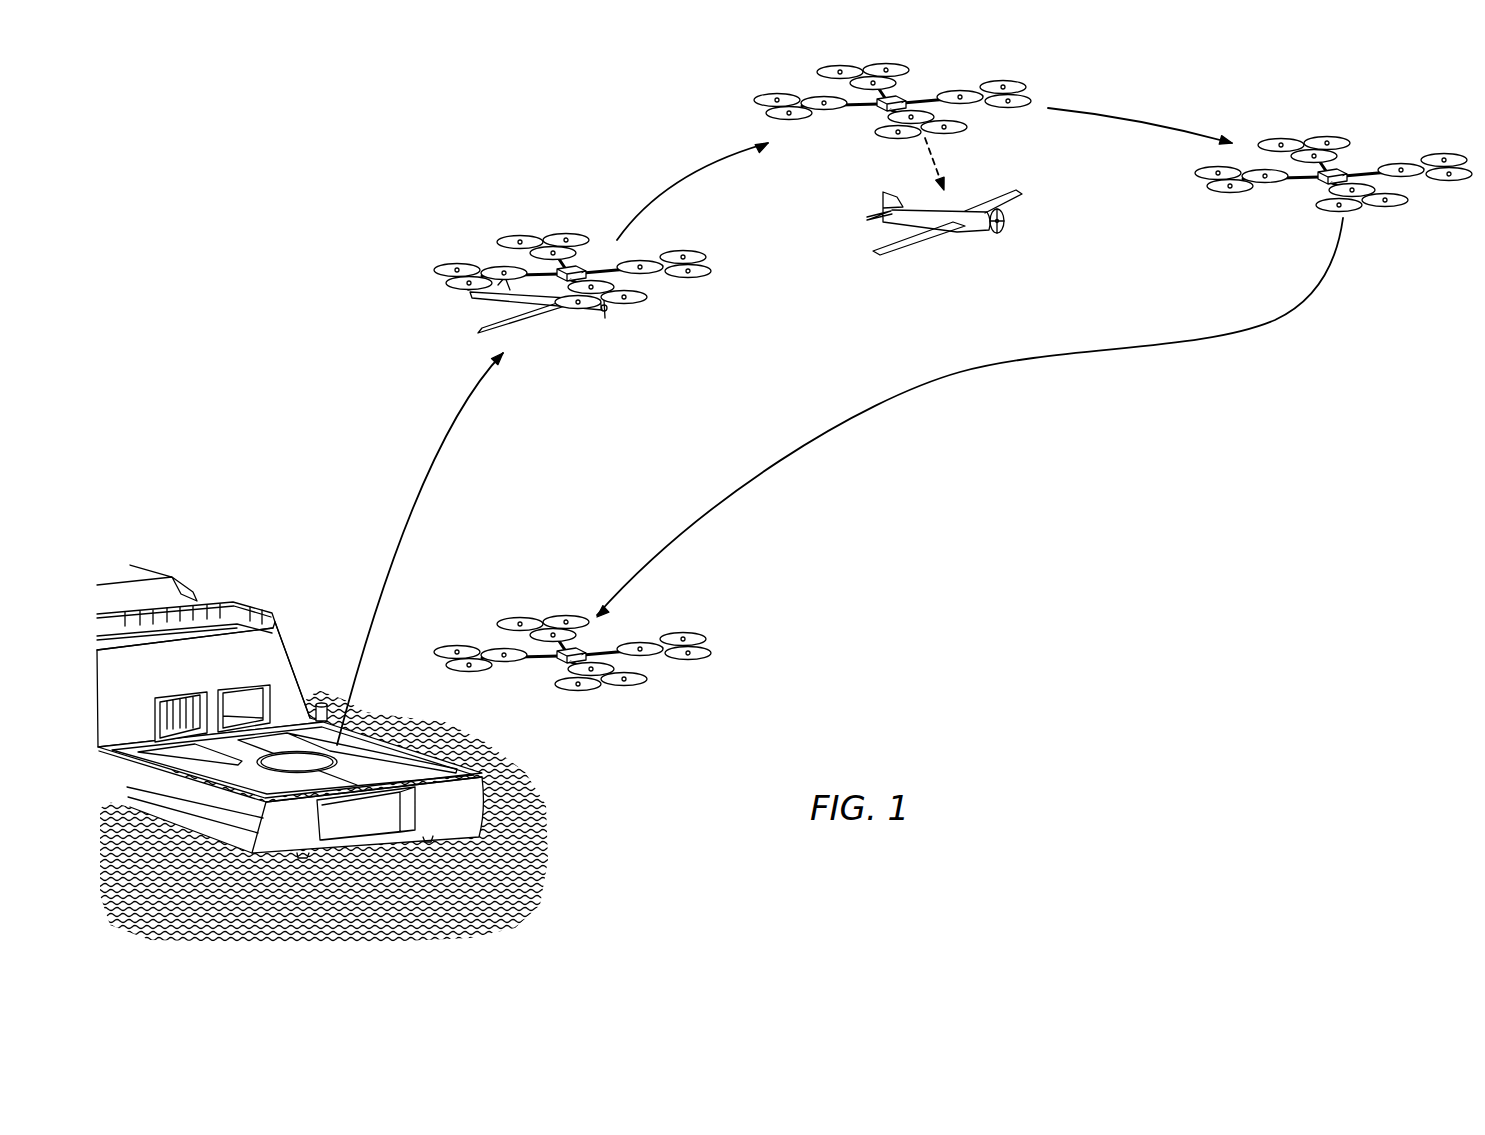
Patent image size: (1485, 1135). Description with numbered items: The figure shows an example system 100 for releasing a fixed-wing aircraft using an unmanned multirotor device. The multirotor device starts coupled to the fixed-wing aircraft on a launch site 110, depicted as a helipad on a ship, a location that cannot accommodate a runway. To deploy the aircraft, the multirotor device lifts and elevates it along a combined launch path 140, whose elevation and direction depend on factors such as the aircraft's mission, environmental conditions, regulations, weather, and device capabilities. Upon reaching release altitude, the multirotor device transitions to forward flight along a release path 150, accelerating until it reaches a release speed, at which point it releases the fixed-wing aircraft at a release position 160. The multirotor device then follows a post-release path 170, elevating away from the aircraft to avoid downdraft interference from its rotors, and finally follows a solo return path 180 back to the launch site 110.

The system 100 is at (1052, 488).
The launch site 110 is at (373, 760).
The combined launch path 140 is at (420, 488).
The release path 150 is at (680, 186).
The release position 160 is at (937, 160).
The post-release path 170 is at (1137, 121).
The solo return path 180 is at (875, 405).